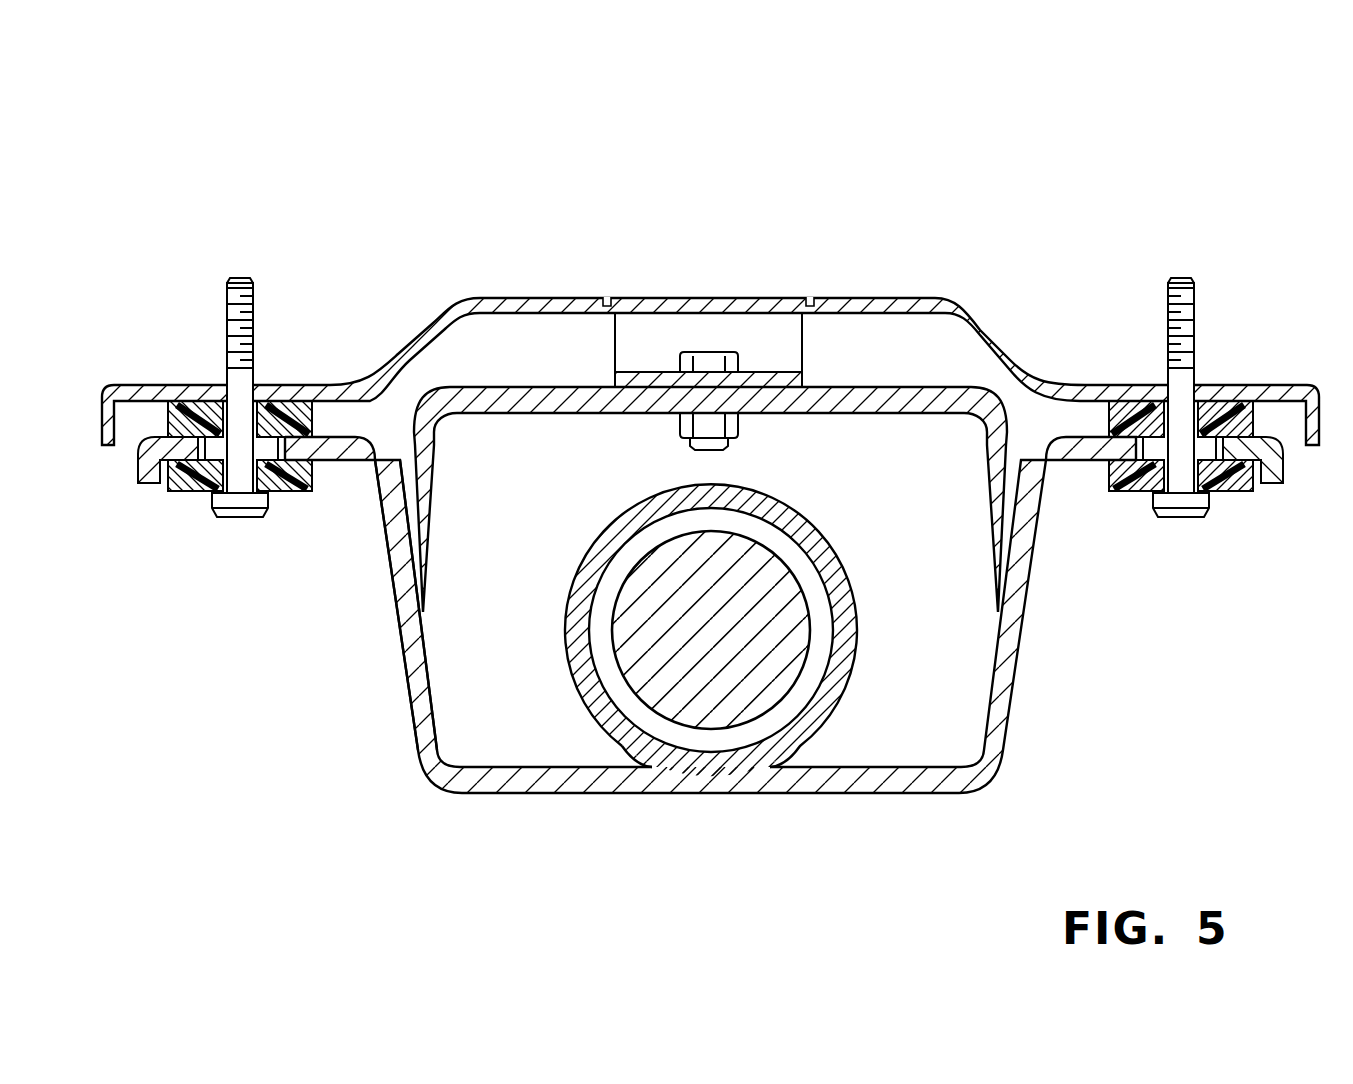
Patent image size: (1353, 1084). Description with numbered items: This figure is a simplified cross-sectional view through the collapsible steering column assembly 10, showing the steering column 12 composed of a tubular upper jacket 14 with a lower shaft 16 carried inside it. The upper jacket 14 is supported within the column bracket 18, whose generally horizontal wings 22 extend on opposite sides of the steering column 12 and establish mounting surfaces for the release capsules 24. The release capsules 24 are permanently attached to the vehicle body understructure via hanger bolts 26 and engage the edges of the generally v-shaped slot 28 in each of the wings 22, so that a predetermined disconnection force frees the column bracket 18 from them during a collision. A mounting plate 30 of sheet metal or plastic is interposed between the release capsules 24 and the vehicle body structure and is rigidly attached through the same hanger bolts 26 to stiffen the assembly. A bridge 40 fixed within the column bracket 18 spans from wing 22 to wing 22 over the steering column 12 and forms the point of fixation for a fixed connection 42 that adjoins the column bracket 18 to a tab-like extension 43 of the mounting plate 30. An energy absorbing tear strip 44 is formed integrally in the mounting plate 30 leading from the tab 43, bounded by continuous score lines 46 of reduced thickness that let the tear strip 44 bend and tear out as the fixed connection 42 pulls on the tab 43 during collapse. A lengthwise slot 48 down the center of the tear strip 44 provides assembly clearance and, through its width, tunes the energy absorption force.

The collapsible steering column assembly 10 is at (258, 148).
The steering column 12 is at (589, 732).
The upper jacket 14 is at (800, 522).
The lower shaft 16 is at (800, 615).
The column bracket 18 is at (398, 690).
The wings 22 is at (137, 472).
The release capsules 24 is at (306, 493).
The hanger bolts 26 is at (228, 517).
The v-shaped slot 28 is at (262, 401).
The mounting plate 30 is at (1316, 388).
The bridge 40 is at (556, 387).
The fixed connection 42 is at (713, 362).
The tab-like extension 43 is at (658, 372).
The energy absorbing tear strip 44 is at (768, 290).
The score line 46 is at (606, 298).
The lengthwise slot 48 is at (668, 303).